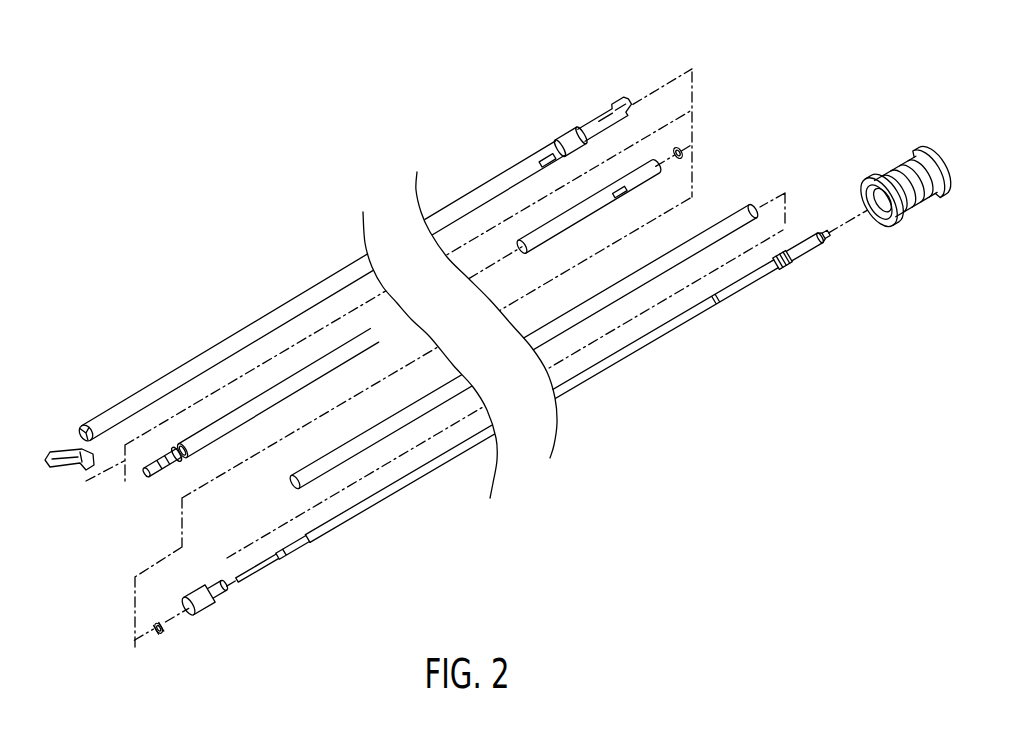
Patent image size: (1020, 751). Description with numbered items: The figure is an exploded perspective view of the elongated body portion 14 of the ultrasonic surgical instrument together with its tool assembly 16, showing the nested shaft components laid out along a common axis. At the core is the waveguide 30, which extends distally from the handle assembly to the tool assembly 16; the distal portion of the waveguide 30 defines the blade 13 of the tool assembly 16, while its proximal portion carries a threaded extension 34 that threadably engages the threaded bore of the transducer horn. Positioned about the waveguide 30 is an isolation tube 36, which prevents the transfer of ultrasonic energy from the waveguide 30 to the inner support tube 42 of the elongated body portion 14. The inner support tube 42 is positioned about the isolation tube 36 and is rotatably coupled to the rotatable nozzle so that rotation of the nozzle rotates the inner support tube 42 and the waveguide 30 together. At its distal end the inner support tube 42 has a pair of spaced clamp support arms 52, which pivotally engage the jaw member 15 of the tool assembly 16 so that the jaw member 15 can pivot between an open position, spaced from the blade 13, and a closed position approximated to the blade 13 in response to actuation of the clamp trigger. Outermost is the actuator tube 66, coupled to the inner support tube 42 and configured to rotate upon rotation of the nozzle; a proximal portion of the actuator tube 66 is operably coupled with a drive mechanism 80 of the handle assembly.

The blade 13 is at (270, 566).
The elongated body portion 14 is at (290, 287).
The jaw member 15 is at (63, 452).
The tool assembly 16 is at (257, 588).
The waveguide 30 is at (657, 337).
The threaded extension 34 is at (822, 242).
The isolation tube 36 is at (728, 222).
The inner support tube 42 is at (522, 248).
The clamp support arms 52 is at (155, 468).
The actuator tube 66 is at (468, 198).
The drive mechanism 80 is at (896, 150).